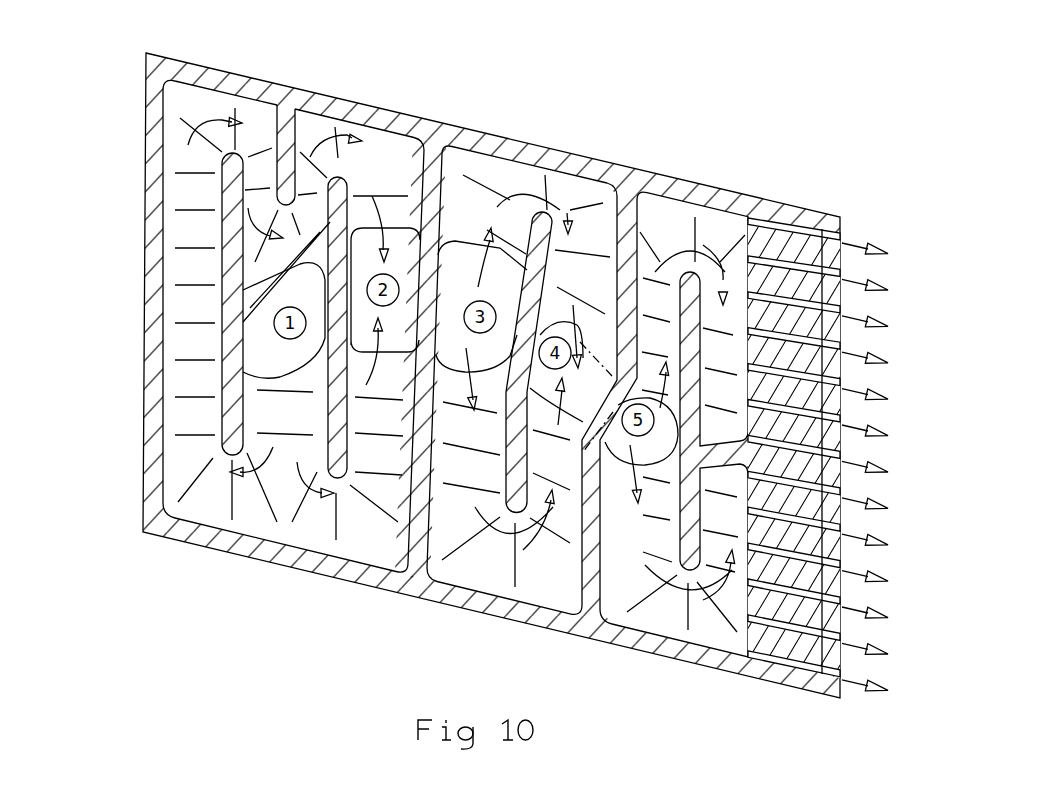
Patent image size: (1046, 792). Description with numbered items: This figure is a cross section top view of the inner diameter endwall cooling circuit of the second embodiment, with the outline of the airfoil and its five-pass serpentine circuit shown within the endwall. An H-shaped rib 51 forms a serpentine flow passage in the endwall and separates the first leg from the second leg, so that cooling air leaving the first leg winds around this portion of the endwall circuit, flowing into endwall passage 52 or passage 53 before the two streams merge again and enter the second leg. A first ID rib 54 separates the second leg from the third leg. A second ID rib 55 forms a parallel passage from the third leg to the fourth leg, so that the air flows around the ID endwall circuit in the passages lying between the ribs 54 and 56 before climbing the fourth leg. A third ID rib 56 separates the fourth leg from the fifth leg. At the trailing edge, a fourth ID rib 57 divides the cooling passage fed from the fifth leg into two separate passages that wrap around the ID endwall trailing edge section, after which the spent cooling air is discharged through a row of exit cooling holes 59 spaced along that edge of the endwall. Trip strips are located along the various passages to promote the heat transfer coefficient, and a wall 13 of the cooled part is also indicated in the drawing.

The partition wall 13 is at (284, 130).
The H-shaped rib 51 is at (230, 232).
The endwall passage 52 is at (190, 343).
The endwall passage 53 is at (375, 458).
The first ID rib 54 is at (432, 177).
The second ID rib 55 is at (538, 233).
The third ID rib 56 is at (633, 237).
The fourth ID rib 57 is at (688, 292).
The exit cooling holes 59 is at (842, 382).